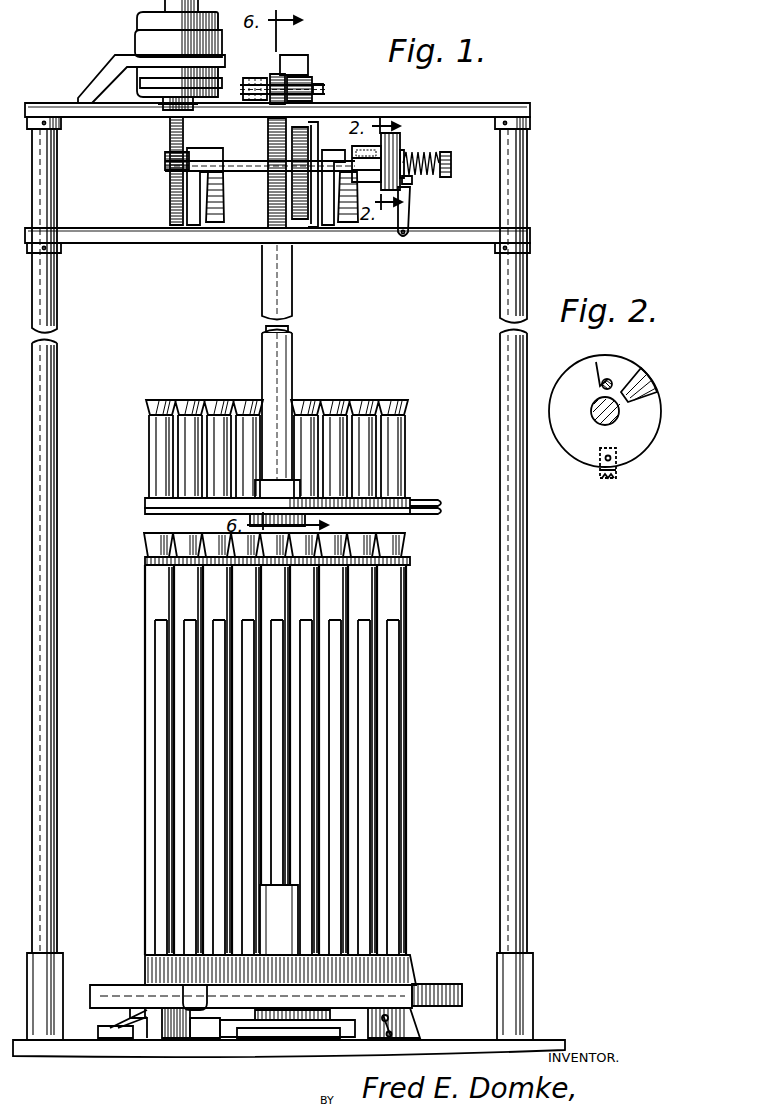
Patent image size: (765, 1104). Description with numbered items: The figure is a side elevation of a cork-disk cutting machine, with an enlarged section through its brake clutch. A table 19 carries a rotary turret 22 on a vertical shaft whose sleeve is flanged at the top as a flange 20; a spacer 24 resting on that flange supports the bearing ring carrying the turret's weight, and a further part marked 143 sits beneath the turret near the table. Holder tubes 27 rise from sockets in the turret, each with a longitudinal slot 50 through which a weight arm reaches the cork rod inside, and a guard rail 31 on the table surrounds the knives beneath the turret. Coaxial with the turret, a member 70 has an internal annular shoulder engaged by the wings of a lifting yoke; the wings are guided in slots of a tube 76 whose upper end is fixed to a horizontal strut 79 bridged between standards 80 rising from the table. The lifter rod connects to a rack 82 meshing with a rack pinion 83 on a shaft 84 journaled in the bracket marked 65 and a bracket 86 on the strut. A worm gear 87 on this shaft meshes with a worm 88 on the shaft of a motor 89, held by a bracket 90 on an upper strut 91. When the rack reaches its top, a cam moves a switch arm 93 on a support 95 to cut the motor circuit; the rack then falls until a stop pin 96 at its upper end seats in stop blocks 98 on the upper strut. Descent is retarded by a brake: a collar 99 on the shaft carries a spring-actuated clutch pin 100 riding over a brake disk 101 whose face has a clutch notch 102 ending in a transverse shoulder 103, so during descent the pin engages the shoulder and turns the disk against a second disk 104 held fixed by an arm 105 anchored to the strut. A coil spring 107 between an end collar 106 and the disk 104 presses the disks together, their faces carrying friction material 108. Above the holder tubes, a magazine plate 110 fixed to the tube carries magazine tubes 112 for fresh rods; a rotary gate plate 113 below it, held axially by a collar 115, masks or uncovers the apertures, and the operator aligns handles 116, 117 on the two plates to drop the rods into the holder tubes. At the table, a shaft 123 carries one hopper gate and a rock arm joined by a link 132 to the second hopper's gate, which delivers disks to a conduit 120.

In FIG. 1, the motor 89 is at (145, 40).
In FIG. 1, the bracket 90 is at (118, 80).
In FIG. 1, the upper strut 91 is at (58, 103).
In FIG. 1, the switch arm 93 is at (274, 72).
In FIG. 1, the support 95 is at (300, 57).
In FIG. 1, the stop blocks 98 is at (312, 80).
In FIG. 1, the stop pin 96 is at (325, 89).
In FIG. 1, the collar 99 is at (355, 148).
In FIG. 1, the worm gear 87 is at (170, 193).
In FIG. 1, the worm 88 is at (166, 163).
In FIG. 1, the bracket 65 is at (205, 156).
In FIG. 1, the shaft 84 is at (254, 172).
In FIG. 1, the rack pinion 83 is at (268, 144).
In FIG. 1, the bracket 86 is at (333, 153).
In FIG. 1, the clutch pin 100 is at (400, 142).
In FIG. 2, the clutch pin 100 is at (612, 381).
In FIG. 1, the disk 104 is at (404, 151).
In FIG. 1, the collar 106 is at (452, 173).
In FIG. 1, the coil spring 107 is at (412, 181).
In FIG. 1, the friction material 108 is at (406, 194).
In FIG. 1, the brake disk 101 is at (367, 192).
In FIG. 2, the brake disk 101 is at (582, 450).
In FIG. 2, the clutch notch 102 is at (634, 379).
In FIG. 2, the transverse shoulder 103 is at (596, 372).
In FIG. 1, the arm 105 is at (411, 222).
In FIG. 2, the arm 105 is at (618, 470).
In FIG. 1, the rack 82 is at (272, 246).
In FIG. 1, the horizontal strut 79 is at (438, 244).
In FIG. 1, the standards 80 is at (57, 384).
In FIG. 1, the magazine tube 112 is at (190, 448).
In FIG. 1, the plate 110 is at (150, 500).
In FIG. 1, the rotary gate plate 113 is at (150, 512).
In FIG. 1, the collar 115 is at (340, 516).
In FIG. 1, the handle 116 is at (430, 502).
In FIG. 1, the handle 117 is at (438, 512).
In FIG. 1, the holder tubes 27 is at (383, 592).
In FIG. 1, the tube 76 is at (260, 580).
In FIG. 1, the longitudinal slot 50 is at (245, 704).
In FIG. 1, the shouldered member 70 is at (267, 945).
In FIG. 1, the rotary turret 22 is at (416, 973).
In FIG. 1, the guard rail 31 is at (104, 985).
In FIG. 1, the cup 143 is at (208, 985).
In FIG. 1, the link 132 is at (220, 1040).
In FIG. 1, the flange 20 is at (256, 1038).
In FIG. 1, the spacer 24 is at (282, 1029).
In FIG. 1, the shaft 123 is at (392, 1028).
In FIG. 1, the conduit 120 is at (383, 1022).
In FIG. 1, the table 19 is at (87, 1042).